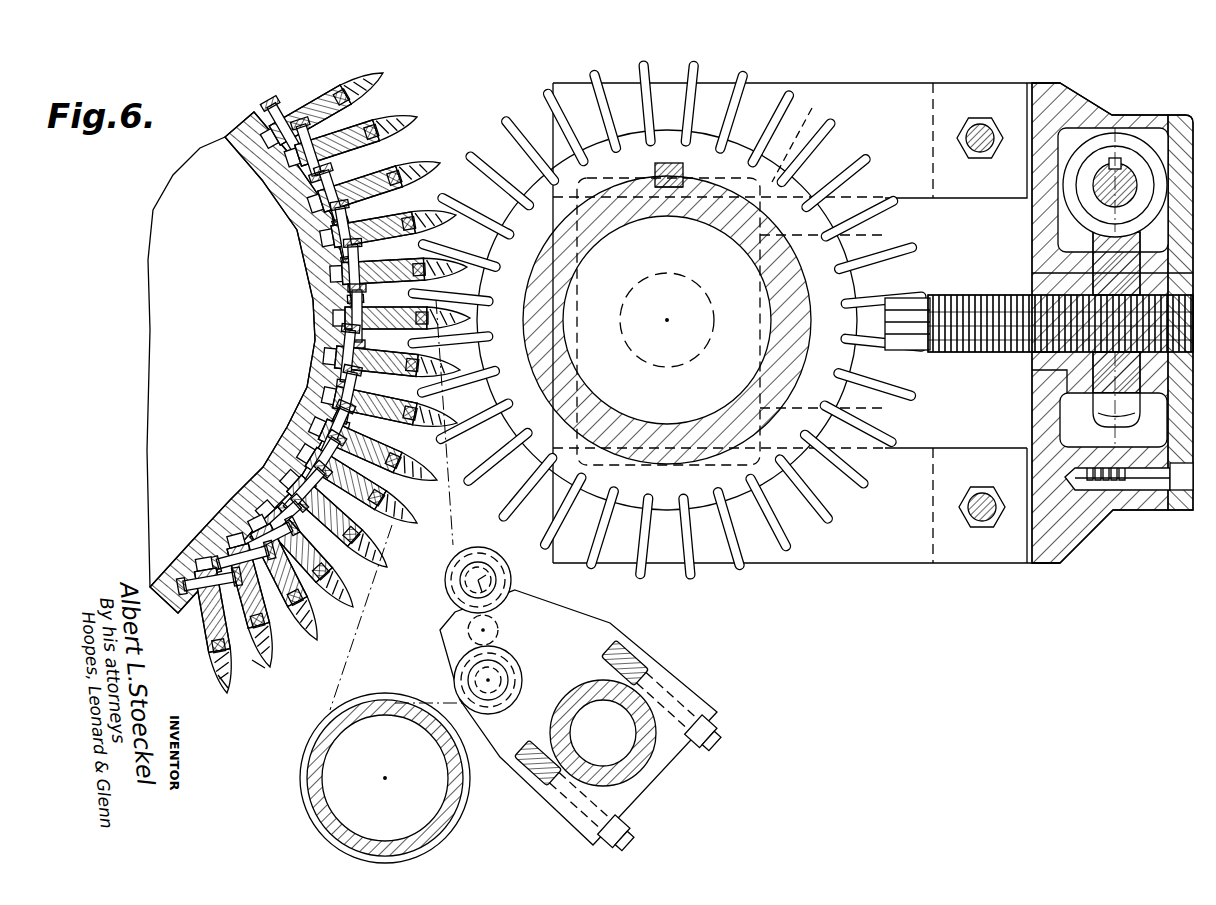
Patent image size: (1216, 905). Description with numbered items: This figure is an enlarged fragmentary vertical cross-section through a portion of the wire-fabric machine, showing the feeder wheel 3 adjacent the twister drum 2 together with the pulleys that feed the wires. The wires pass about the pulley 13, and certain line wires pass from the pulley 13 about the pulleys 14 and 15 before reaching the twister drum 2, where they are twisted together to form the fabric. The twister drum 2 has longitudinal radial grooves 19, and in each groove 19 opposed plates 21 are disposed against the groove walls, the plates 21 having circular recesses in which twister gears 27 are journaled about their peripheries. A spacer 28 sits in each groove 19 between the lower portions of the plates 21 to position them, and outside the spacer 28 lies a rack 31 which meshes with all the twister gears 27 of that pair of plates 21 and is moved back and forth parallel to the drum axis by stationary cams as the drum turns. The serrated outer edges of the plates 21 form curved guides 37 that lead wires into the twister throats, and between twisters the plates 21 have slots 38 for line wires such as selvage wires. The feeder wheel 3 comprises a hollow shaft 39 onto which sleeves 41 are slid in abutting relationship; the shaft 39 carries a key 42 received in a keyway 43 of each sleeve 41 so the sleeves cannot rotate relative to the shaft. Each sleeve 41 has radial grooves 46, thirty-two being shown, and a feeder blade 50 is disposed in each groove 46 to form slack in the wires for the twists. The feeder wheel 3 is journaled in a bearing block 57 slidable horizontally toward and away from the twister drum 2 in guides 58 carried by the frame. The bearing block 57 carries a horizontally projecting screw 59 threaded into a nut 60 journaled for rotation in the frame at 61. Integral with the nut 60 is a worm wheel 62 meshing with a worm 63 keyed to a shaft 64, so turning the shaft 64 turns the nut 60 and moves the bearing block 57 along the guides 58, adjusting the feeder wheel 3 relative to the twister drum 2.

The twister drum 2 is at (352, 108).
The feeder wheel 3 is at (757, 470).
The pulley 13 is at (305, 782).
The pulley 14 is at (515, 664).
The pulley 15 is at (510, 582).
The longitudinal radial groove 19 is at (312, 333).
The plate 21 is at (198, 654).
The twister gear 27 is at (238, 645).
The spacer 28 is at (338, 368).
The rack 31 is at (276, 645).
The curved guide 37 is at (262, 668).
The slot 38 is at (218, 672).
The hollow shaft 39 is at (588, 227).
The sleeve 41 is at (838, 506).
The key 42 is at (667, 187).
The keyway 43 is at (667, 163).
The radial groove 46 is at (840, 120).
The feeder blade 50 is at (740, 567).
The bearing block 57 is at (802, 132).
The guide 58 is at (918, 190).
The screw 59 is at (990, 352).
The nut 60 is at (1078, 262).
The journal in frame 61 is at (1046, 388).
The worm wheel 62 is at (1112, 418).
The worm 63 is at (1135, 148).
The shaft 64 is at (1096, 185).